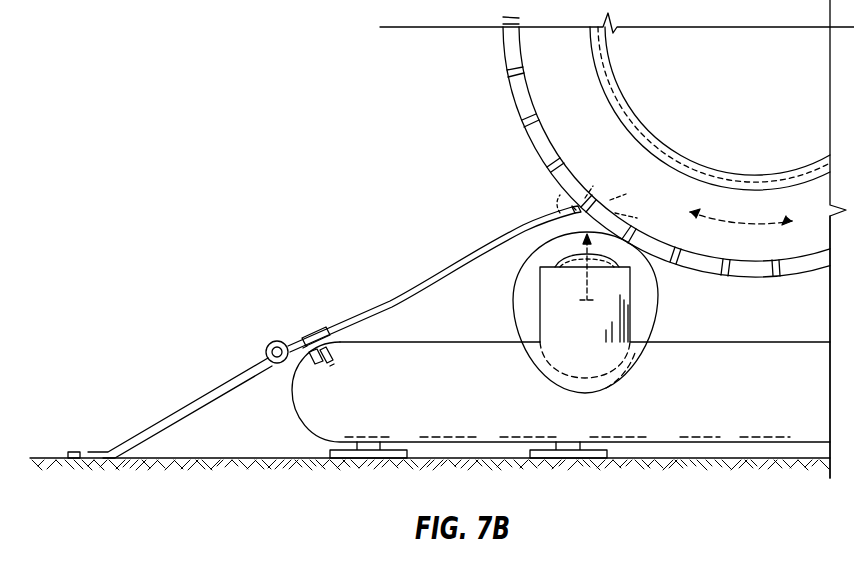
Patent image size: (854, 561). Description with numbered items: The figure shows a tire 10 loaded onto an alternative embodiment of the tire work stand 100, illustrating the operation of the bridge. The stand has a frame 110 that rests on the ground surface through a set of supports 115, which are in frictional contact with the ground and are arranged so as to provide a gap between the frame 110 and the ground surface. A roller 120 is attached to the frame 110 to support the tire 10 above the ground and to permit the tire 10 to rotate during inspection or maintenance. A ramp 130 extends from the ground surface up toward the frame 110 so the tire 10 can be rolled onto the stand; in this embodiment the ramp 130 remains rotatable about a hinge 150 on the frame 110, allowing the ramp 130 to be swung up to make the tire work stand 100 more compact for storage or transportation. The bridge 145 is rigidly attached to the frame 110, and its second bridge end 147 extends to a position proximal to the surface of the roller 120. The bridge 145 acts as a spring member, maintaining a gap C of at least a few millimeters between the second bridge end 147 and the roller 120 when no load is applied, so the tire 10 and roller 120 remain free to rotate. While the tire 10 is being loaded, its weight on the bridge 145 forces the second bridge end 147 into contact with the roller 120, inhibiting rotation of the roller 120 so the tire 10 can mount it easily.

The tire work stand 100 is at (250, 58).
The tire 10 is at (515, 106).
The gap C is at (598, 210).
The bridge 145 is at (478, 252).
The second bridge end 147 is at (564, 210).
The hinge 150 is at (278, 341).
The ramp 130 is at (191, 398).
The frame 110 is at (752, 407).
The supports 115 is at (392, 441).
The roller 120 is at (516, 296).